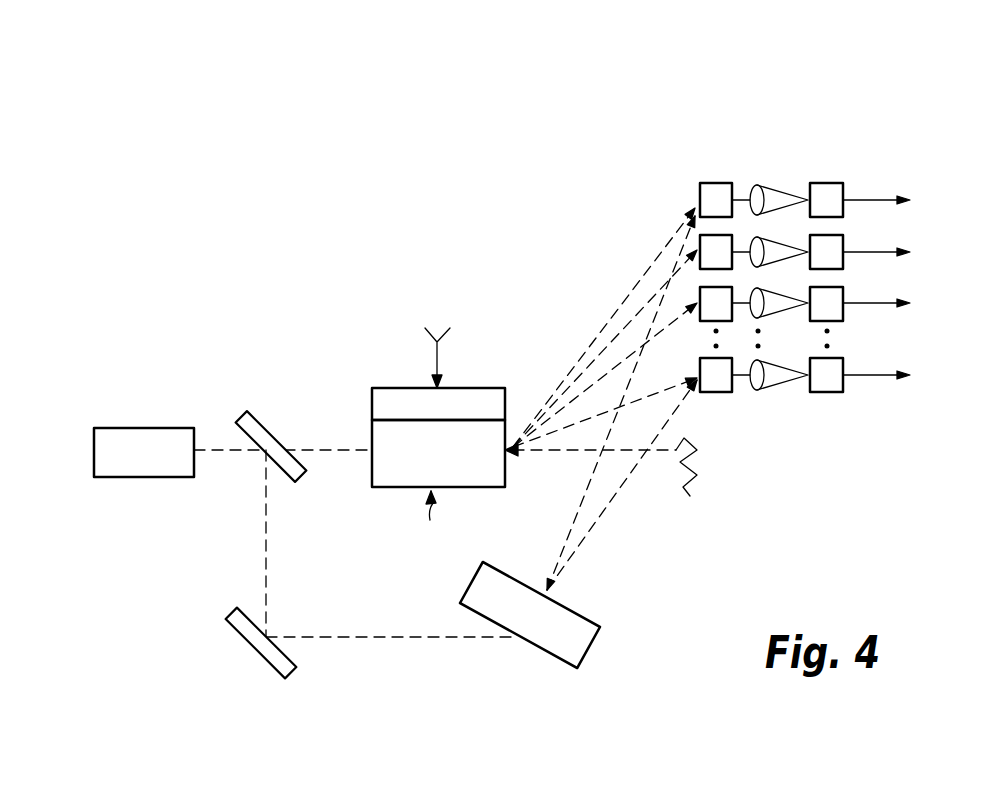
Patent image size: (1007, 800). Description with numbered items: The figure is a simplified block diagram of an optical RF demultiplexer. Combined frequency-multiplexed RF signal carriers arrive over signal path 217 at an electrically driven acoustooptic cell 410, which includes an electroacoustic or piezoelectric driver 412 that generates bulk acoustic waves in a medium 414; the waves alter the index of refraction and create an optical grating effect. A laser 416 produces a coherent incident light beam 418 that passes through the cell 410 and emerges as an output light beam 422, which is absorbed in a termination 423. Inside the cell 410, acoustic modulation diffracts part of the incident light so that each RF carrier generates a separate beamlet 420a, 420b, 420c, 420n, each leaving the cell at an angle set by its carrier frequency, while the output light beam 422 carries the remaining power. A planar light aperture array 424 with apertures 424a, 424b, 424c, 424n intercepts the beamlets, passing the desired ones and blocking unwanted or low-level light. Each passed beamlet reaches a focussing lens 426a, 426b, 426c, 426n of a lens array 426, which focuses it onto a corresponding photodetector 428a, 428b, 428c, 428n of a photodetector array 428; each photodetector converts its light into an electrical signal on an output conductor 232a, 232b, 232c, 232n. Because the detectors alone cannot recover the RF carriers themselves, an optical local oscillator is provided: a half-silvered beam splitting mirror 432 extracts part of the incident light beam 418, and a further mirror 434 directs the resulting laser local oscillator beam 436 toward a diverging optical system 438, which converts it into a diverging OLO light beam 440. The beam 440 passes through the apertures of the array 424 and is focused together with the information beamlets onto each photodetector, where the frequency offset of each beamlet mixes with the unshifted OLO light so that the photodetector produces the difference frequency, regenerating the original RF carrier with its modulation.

The laser 416 is at (145, 428).
The incident light beam 418 is at (321, 450).
The half-silvered beam splitting mirror 432 is at (249, 412).
The further mirror 434 is at (230, 626).
The laser local oscillator beam 436 is at (381, 636).
The diverging optical system 438 is at (585, 616).
The diverging OLO light beam 440 is at (600, 513).
The acoustooptic cell 410 is at (446, 558).
The driver 412 is at (370, 393).
The medium 414 is at (372, 480).
The signal path 217 is at (436, 360).
The output light beam 422 is at (545, 455).
The termination 423 is at (690, 485).
The beamlet 420a is at (695, 204).
The beamlet 420b is at (615, 337).
The beamlet 420c is at (592, 382).
The beamlet 420n is at (670, 390).
The light aperture array 424 is at (732, 113).
The aperture 424a is at (703, 183).
The aperture 424b is at (698, 241).
The aperture 424c is at (698, 297).
The aperture 424n is at (716, 392).
The lens array 426 is at (755, 138).
The focussing lens 426a is at (751, 185).
The focussing lens 426b is at (750, 265).
The focussing lens 426c is at (761, 321).
The focussing lens 426n is at (763, 392).
The photodetector array 428 is at (844, 113).
The photodetector 428a is at (832, 182).
The photodetector 428b is at (842, 238).
The photodetector 428c is at (834, 322).
The photodetector 428n is at (827, 392).
The output conductor 232a is at (876, 198).
The output conductor 232b is at (873, 256).
The output conductor 232c is at (855, 303).
The output conductor 232n is at (854, 378).